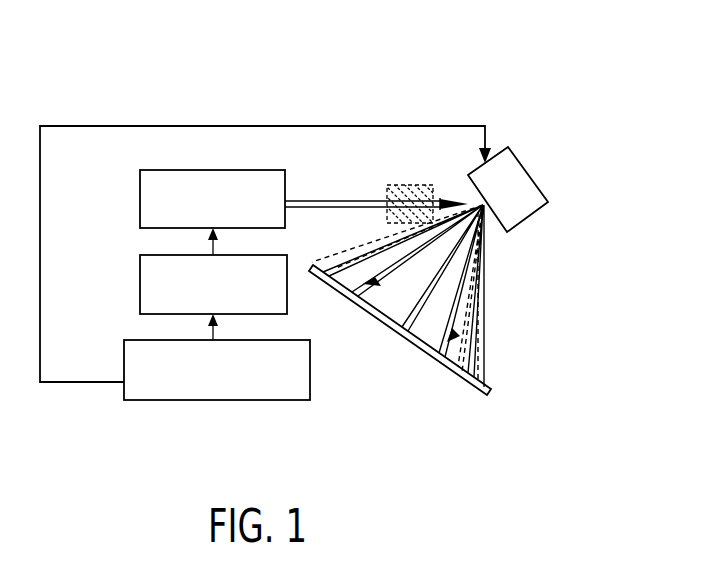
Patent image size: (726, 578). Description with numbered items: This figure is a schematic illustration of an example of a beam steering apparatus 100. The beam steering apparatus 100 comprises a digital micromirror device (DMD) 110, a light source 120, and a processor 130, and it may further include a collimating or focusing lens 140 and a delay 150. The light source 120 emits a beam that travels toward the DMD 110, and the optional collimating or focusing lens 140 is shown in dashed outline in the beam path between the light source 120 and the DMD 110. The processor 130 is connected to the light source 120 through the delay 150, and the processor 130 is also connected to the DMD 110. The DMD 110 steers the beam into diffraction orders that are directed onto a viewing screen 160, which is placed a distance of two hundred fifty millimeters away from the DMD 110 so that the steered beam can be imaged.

The beam steering apparatus 100 is at (440, 75).
The digital micromirror device 110 is at (530, 170).
The light source 120 is at (140, 203).
The processor 130 is at (124, 352).
The collimating or focusing lens 140 is at (386, 220).
The delay 150 is at (140, 275).
The viewing screen 160 is at (455, 374).